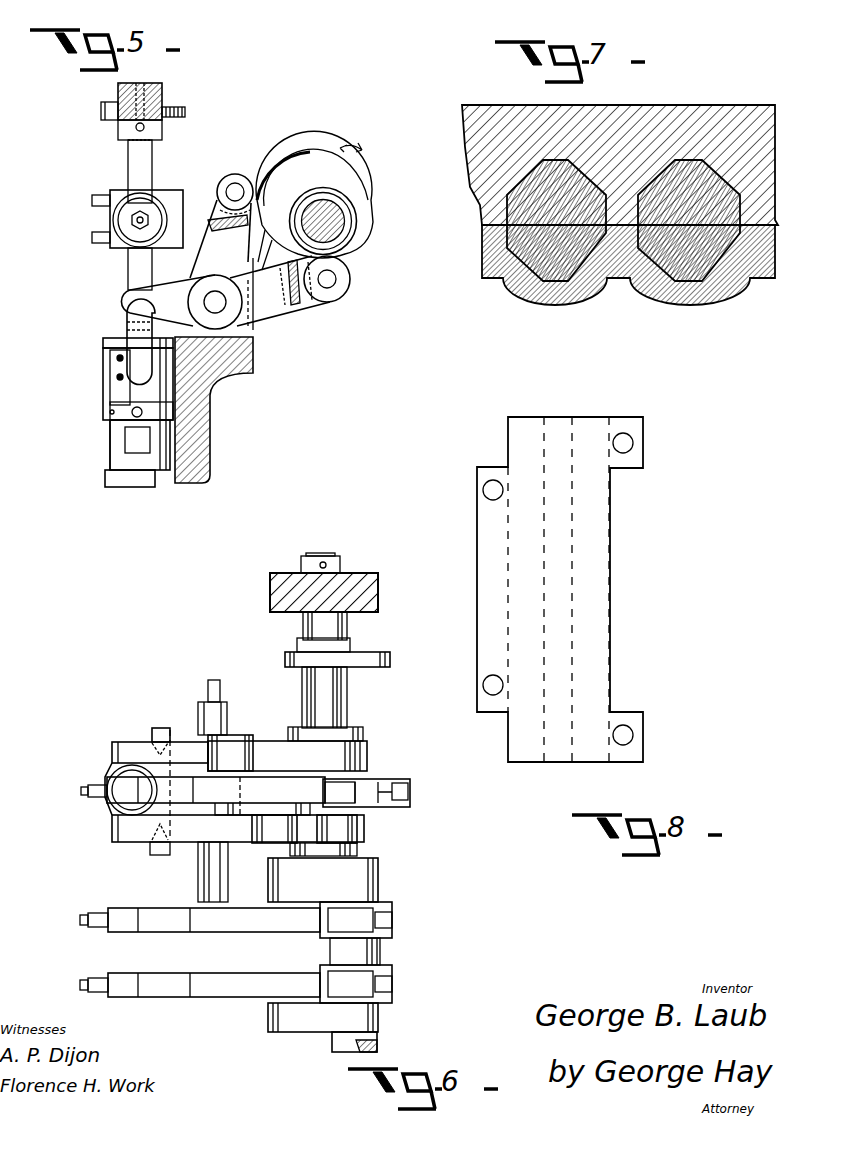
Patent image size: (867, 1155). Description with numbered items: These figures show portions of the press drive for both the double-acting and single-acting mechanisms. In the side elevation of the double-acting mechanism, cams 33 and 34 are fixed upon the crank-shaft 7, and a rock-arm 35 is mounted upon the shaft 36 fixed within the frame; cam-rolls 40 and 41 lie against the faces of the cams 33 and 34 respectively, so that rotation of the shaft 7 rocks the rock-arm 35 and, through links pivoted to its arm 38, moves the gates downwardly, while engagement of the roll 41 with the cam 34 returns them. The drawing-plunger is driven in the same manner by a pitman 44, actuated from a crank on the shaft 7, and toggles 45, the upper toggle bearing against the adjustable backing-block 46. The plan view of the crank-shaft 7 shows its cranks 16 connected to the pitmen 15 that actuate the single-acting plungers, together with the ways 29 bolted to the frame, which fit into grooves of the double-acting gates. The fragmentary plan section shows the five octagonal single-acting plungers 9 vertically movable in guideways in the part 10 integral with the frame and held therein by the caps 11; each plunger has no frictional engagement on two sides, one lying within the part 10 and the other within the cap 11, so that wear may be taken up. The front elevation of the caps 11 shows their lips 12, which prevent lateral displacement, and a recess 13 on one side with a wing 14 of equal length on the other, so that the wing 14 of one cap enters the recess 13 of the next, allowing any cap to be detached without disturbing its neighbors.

In FIG. 5, the crank-shaft 7 is at (340, 232).
In FIG. 6, the crank-shaft 7 is at (380, 1036).
In FIG. 7, the single-acting plungers 9 is at (547, 272).
In FIG. 7, the part integral with the frame 10 is at (680, 100).
In FIG. 7, the caps 11 is at (587, 294).
In FIG. 7, the lips 12 is at (492, 233).
In FIG. 8, the recess 13 is at (662, 704).
In FIG. 8, the wing 14 is at (477, 649).
In FIG. 6, the pitmen 15 is at (268, 926).
In FIG. 6, the cranks 16 is at (382, 948).
In FIG. 6, the ways 29 is at (152, 733).
In FIG. 5, the cam 33 is at (364, 184).
In FIG. 5, the cam 34 is at (304, 160).
In FIG. 5, the rock-arm 35 is at (233, 317).
In FIG. 5, the shaft 36 is at (225, 305).
In FIG. 5, the arm 38 is at (120, 302).
In FIG. 5, the cam-roll 40 is at (238, 174).
In FIG. 5, the cam-roll 41 is at (345, 295).
In FIG. 5, the pitman 44 is at (172, 186).
In FIG. 5, the toggles 45 is at (128, 167).
In FIG. 5, the backing-block 46 is at (162, 90).